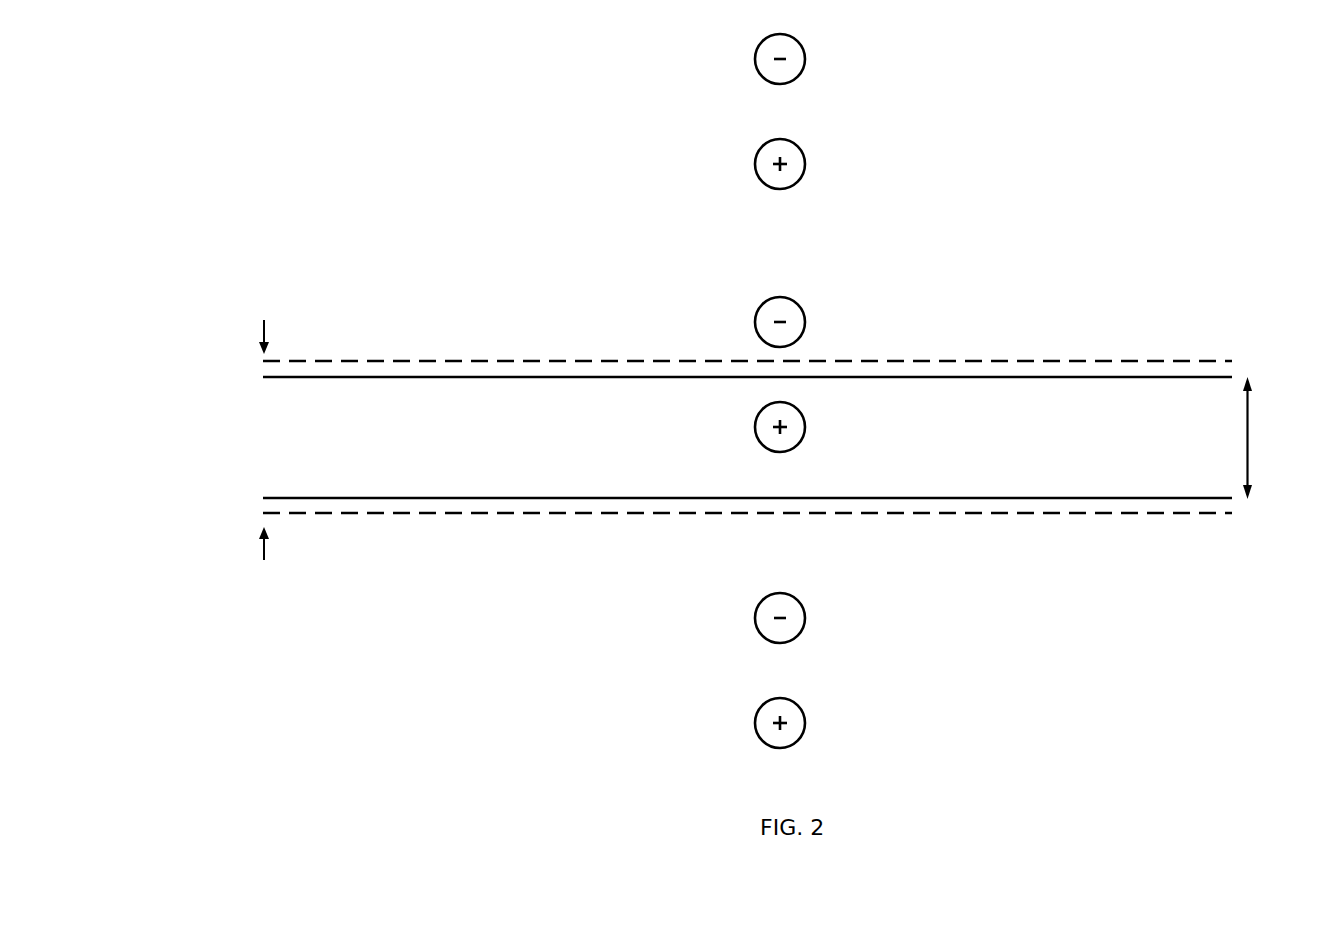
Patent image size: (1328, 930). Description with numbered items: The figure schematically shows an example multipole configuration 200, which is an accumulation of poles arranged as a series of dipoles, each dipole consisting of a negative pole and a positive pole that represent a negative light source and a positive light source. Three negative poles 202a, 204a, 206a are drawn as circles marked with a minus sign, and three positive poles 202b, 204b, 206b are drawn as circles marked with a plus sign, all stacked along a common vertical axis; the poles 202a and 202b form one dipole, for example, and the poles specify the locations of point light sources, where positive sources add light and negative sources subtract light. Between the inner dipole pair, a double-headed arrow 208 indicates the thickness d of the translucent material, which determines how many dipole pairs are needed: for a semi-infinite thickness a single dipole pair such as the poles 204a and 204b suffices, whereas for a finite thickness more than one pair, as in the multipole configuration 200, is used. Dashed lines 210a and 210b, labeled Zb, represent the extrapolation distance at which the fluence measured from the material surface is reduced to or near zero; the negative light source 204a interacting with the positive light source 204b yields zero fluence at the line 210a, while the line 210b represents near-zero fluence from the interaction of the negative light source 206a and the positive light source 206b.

The multipole configuration 200 is at (437, 124).
The negative pole 202a is at (805, 55).
The positive pole 202b is at (805, 160).
The negative pole 204a is at (805, 318).
The positive pole 204b is at (805, 423).
The negative pole 206a is at (805, 614).
The positive pole 206b is at (805, 719).
The arrow 208 is at (1248, 478).
The line 210a is at (353, 361).
The line 210b is at (353, 513).